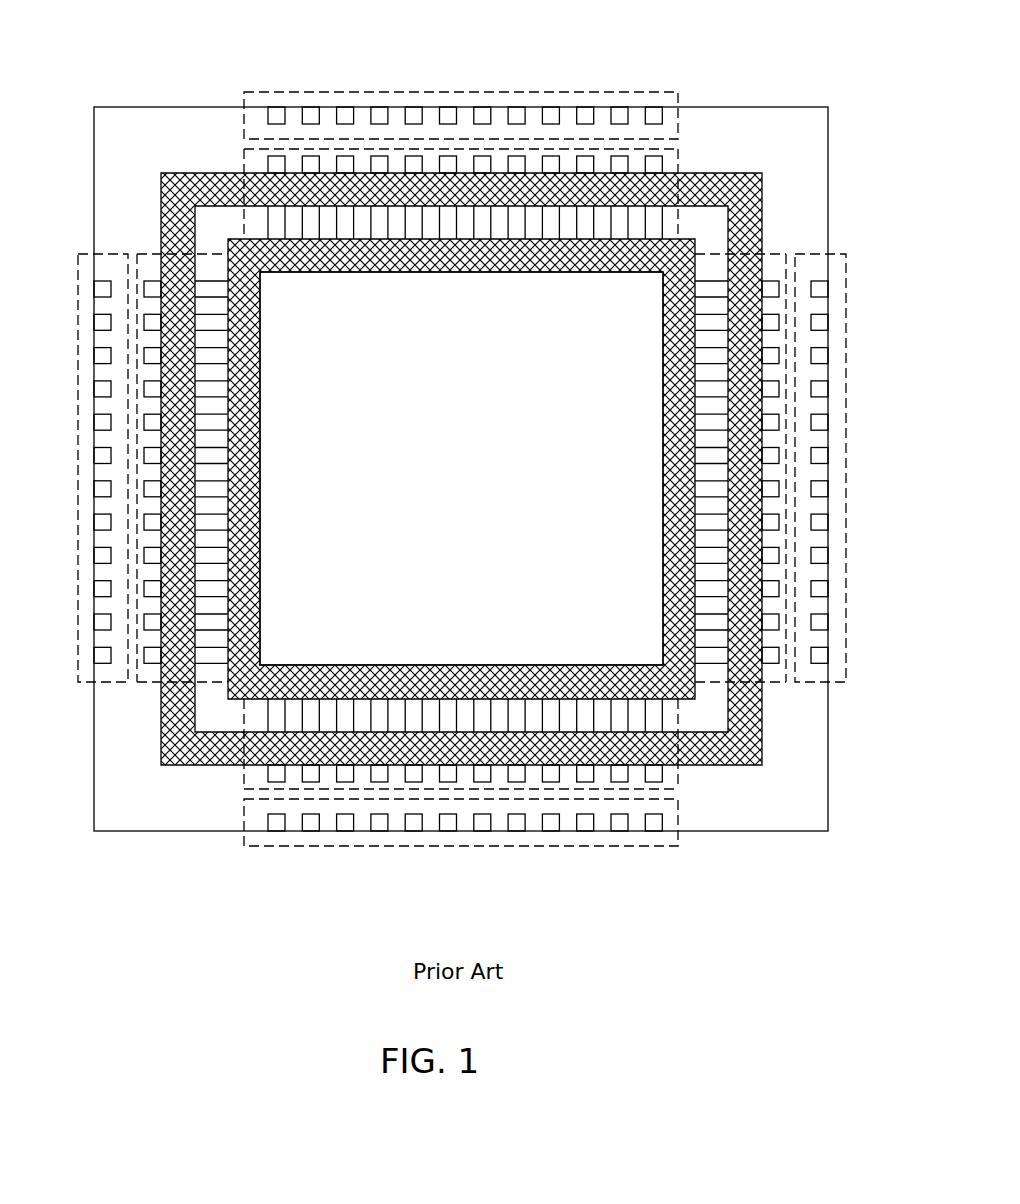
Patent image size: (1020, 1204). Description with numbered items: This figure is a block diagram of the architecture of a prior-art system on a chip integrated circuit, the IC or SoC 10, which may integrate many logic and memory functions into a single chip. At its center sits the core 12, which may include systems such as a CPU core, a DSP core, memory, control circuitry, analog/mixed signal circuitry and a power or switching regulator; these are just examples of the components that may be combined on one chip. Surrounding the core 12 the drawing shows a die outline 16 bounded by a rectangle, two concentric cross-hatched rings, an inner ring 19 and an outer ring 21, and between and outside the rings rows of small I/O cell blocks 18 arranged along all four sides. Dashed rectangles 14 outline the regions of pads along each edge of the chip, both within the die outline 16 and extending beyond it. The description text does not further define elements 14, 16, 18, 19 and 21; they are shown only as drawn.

The IC or SoC 10 is at (850, 67).
The core 12 is at (473, 490).
The bond pad regions 14 is at (647, 91).
The die 16 is at (165, 107).
The I/O cells 18 is at (678, 161).
The inner power ring 19 is at (653, 273).
The outer power ring 21 is at (752, 173).